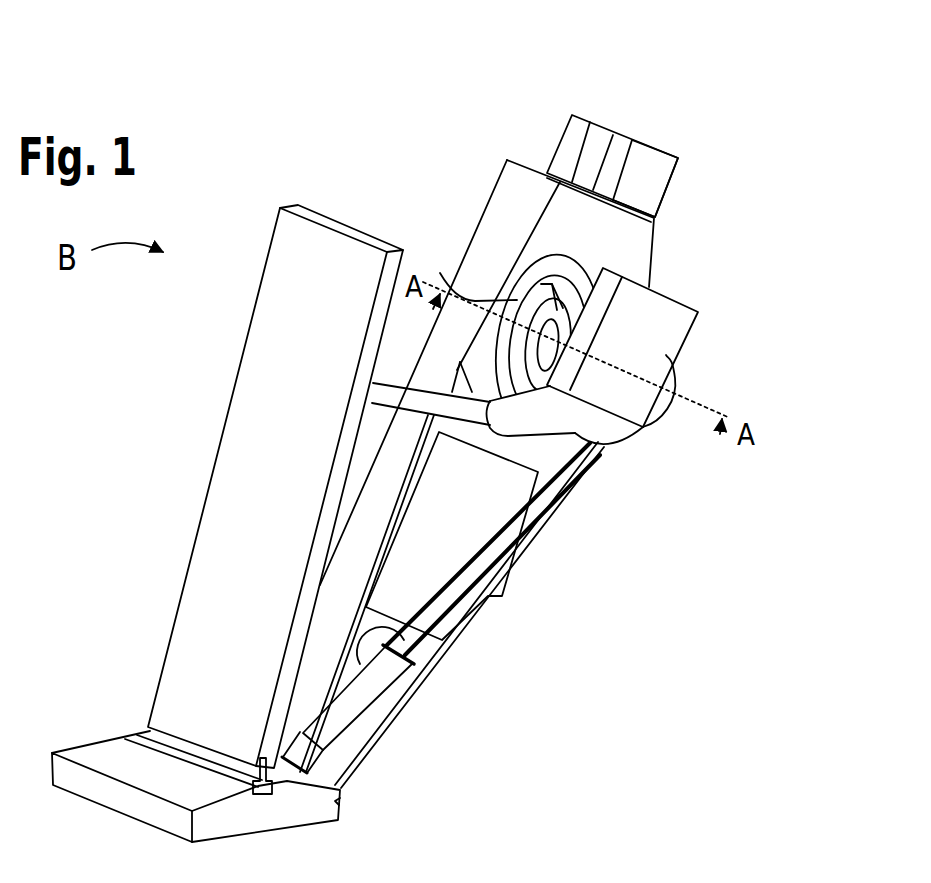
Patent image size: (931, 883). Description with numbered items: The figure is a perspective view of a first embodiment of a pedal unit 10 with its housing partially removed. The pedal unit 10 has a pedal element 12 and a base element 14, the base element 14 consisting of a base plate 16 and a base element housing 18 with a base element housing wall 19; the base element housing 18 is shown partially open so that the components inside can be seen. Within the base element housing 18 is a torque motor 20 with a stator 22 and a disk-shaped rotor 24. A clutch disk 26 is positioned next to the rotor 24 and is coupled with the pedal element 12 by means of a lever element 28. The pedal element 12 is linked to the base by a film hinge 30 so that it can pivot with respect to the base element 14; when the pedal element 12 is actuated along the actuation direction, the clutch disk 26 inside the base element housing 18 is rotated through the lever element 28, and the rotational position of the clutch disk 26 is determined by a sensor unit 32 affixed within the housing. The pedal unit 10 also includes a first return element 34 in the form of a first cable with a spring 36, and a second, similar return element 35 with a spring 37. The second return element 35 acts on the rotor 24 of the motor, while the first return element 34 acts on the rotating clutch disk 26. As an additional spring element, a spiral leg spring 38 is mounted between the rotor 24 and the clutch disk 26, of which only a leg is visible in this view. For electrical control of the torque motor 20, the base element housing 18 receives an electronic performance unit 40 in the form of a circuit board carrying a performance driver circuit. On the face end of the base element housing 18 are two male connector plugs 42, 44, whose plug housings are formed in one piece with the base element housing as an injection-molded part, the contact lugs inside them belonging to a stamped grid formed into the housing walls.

The pedal unit 10 is at (778, 188).
The pedal element 12 is at (285, 375).
The base element 14 is at (537, 757).
The base plate 16 is at (340, 802).
The base element housing 18 is at (417, 687).
The base element housing wall 19 is at (485, 211).
The torque motor 20 is at (431, 193).
The stator 22 is at (439, 477).
The rotor 24 is at (464, 265).
The clutch disk 26 is at (588, 442).
The lever element 28 is at (398, 385).
The film hinge 30 is at (175, 737).
The sensor unit 32 is at (668, 328).
The first return element 34 is at (525, 538).
The second return element 35 is at (553, 487).
The spring 36 is at (362, 708).
The spring 37 is at (423, 653).
The spiral leg spring 38 is at (525, 268).
The electronic performance unit 40 is at (488, 522).
The male connector plug 42 is at (590, 123).
The male connector plug 44 is at (640, 167).